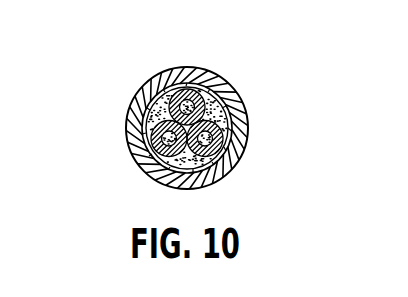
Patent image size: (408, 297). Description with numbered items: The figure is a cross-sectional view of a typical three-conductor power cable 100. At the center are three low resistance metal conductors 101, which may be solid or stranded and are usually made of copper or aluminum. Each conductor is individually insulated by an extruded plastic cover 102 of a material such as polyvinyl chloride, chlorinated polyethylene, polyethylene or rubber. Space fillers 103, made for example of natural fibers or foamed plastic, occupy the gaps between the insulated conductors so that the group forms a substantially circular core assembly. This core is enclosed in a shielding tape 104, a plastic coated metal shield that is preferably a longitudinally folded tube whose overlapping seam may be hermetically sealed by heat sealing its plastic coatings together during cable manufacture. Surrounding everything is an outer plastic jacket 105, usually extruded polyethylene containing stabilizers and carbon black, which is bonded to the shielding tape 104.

The power cable 100 is at (125, 142).
The metal conductors 101 is at (199, 104).
The extruded plastic cover 102 is at (179, 88).
The space fillers 103 is at (166, 108).
The shielding tape 104 is at (234, 127).
The outer plastic jacket 105 is at (224, 166).